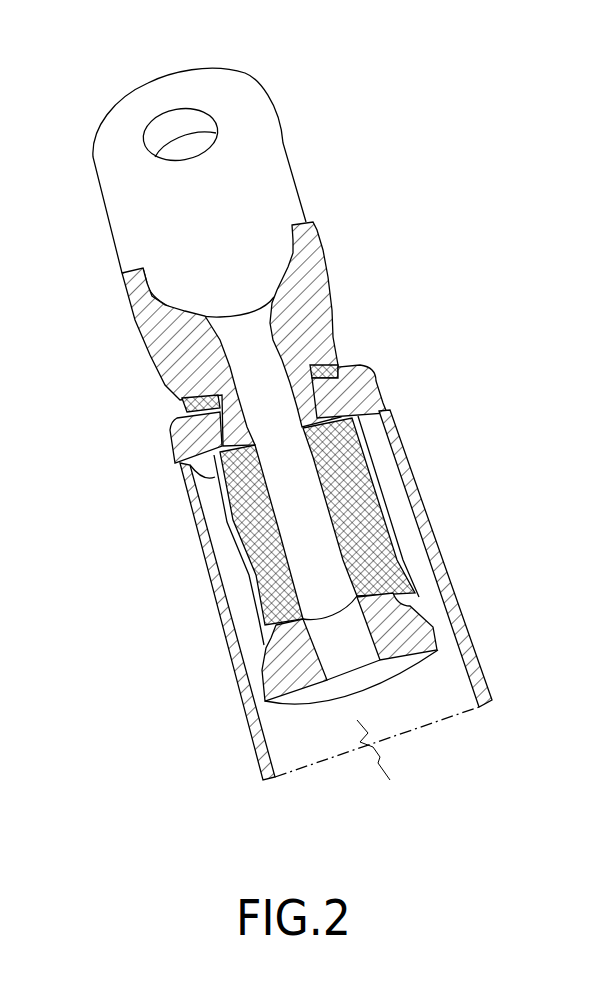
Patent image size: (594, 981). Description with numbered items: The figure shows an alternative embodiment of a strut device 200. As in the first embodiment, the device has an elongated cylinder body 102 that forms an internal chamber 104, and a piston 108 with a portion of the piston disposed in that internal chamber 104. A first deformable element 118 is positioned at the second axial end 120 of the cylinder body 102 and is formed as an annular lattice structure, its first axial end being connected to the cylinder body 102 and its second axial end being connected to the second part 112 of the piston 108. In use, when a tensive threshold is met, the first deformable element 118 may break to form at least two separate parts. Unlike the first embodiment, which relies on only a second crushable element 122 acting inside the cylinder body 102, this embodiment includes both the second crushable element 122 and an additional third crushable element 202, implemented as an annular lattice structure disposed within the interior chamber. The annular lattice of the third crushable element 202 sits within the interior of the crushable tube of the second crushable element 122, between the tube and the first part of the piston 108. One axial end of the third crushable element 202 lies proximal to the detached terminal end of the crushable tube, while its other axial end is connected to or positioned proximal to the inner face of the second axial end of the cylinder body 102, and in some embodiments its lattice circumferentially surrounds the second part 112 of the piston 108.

The strut device 200 is at (297, 396).
The elongated cylinder body 102 is at (449, 578).
The internal chamber 104 is at (446, 666).
The piston 108 is at (318, 268).
The second part of the piston 112 is at (145, 318).
The first deformable element 118 is at (348, 358).
The second axial end of the cylinder body 120 is at (188, 400).
The second crushable element 122 is at (386, 487).
The third crushable element 202 is at (230, 537).